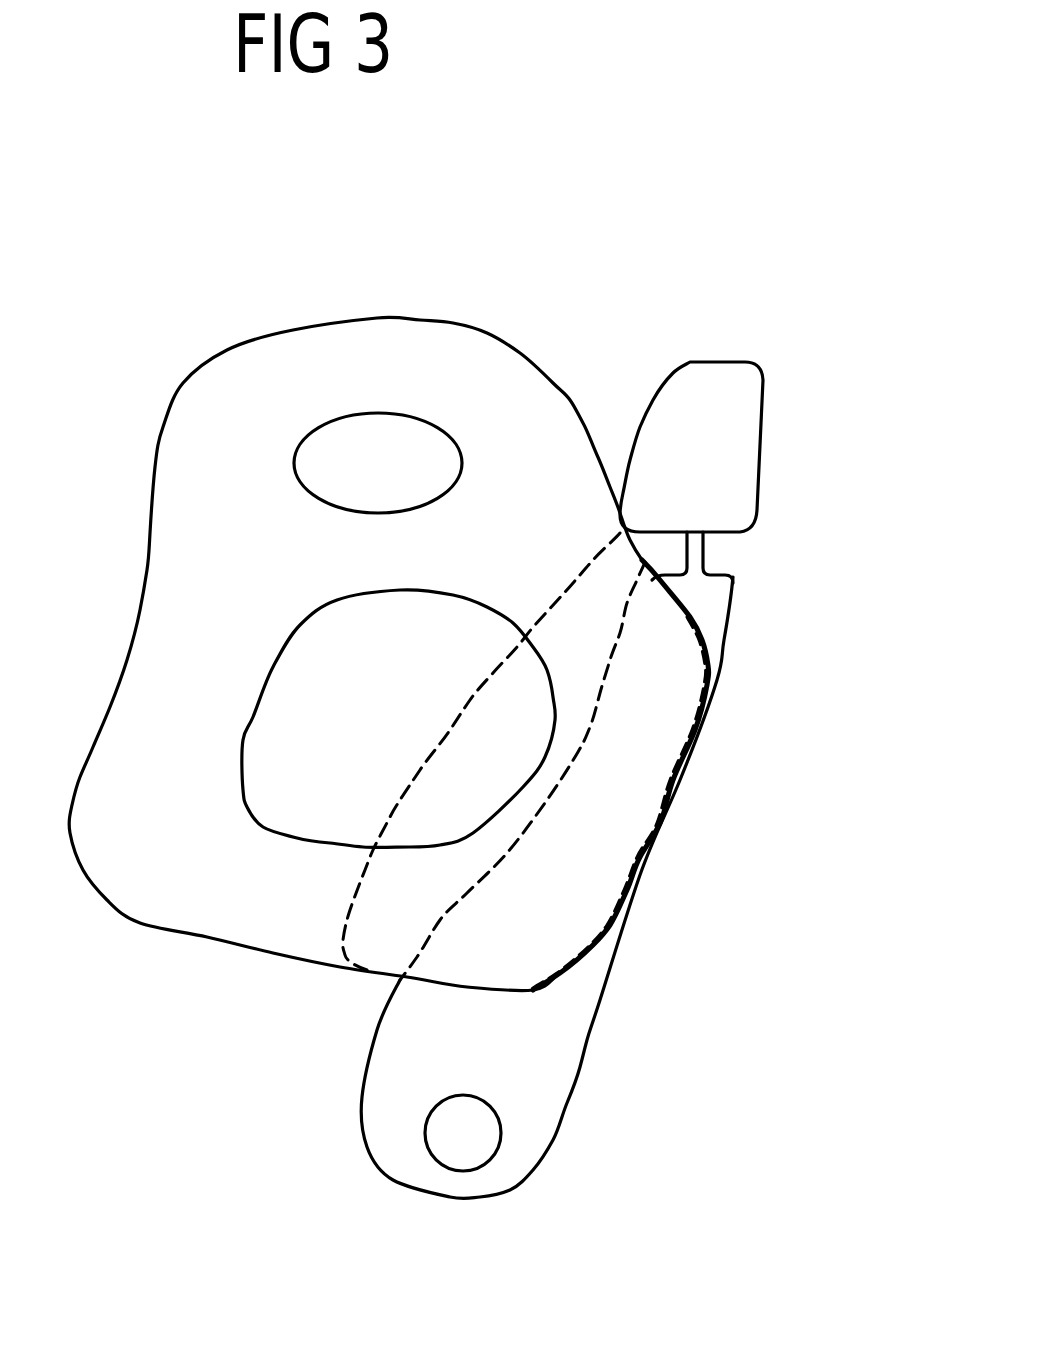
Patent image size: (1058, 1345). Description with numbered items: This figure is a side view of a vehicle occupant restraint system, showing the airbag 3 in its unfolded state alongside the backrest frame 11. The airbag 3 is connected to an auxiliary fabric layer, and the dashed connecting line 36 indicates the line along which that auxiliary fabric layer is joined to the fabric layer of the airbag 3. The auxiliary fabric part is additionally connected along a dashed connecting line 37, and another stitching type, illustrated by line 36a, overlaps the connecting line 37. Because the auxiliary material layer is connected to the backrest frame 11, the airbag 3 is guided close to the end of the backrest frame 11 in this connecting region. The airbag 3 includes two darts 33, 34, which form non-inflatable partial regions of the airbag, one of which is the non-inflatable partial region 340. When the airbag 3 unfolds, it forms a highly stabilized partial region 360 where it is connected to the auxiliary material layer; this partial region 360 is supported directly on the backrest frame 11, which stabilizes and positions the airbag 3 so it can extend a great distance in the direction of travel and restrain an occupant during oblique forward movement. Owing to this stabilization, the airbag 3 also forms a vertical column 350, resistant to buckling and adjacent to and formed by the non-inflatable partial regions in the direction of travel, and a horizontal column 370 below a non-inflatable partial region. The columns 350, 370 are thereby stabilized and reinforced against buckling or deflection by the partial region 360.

The airbag 3 is at (502, 372).
The dart 33 is at (413, 413).
The non-inflatable partial region 340 is at (428, 491).
The dart 34 is at (452, 595).
The vertical column 350 is at (244, 373).
The connecting line 36 is at (357, 883).
The stitching line 36a is at (490, 867).
The connecting line 37 is at (583, 740).
The stabilized partial region 360 is at (705, 606).
The horizontal column 370 is at (331, 938).
The backrest frame 11 is at (575, 1033).